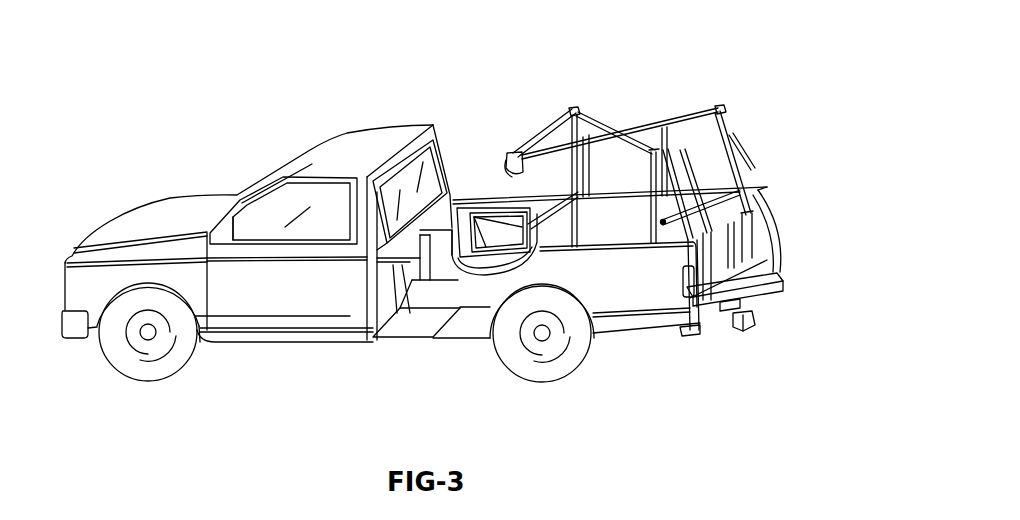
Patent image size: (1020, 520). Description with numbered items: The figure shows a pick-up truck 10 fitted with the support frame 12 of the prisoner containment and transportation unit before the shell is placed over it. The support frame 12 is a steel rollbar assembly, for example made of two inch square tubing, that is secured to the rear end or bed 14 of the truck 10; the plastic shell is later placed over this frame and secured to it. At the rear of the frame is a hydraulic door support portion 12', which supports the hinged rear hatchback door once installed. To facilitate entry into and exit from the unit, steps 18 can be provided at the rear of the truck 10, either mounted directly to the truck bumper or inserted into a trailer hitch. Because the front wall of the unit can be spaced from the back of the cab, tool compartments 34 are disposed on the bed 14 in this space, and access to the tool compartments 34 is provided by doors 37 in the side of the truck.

The pick-up truck 10 is at (297, 305).
The support frame 12 is at (611, 142).
The hydraulic door support portion 12' is at (741, 211).
The bed 14 is at (760, 234).
The steps 18 is at (755, 318).
The tool compartments 34 is at (458, 283).
The doors 37 is at (403, 327).